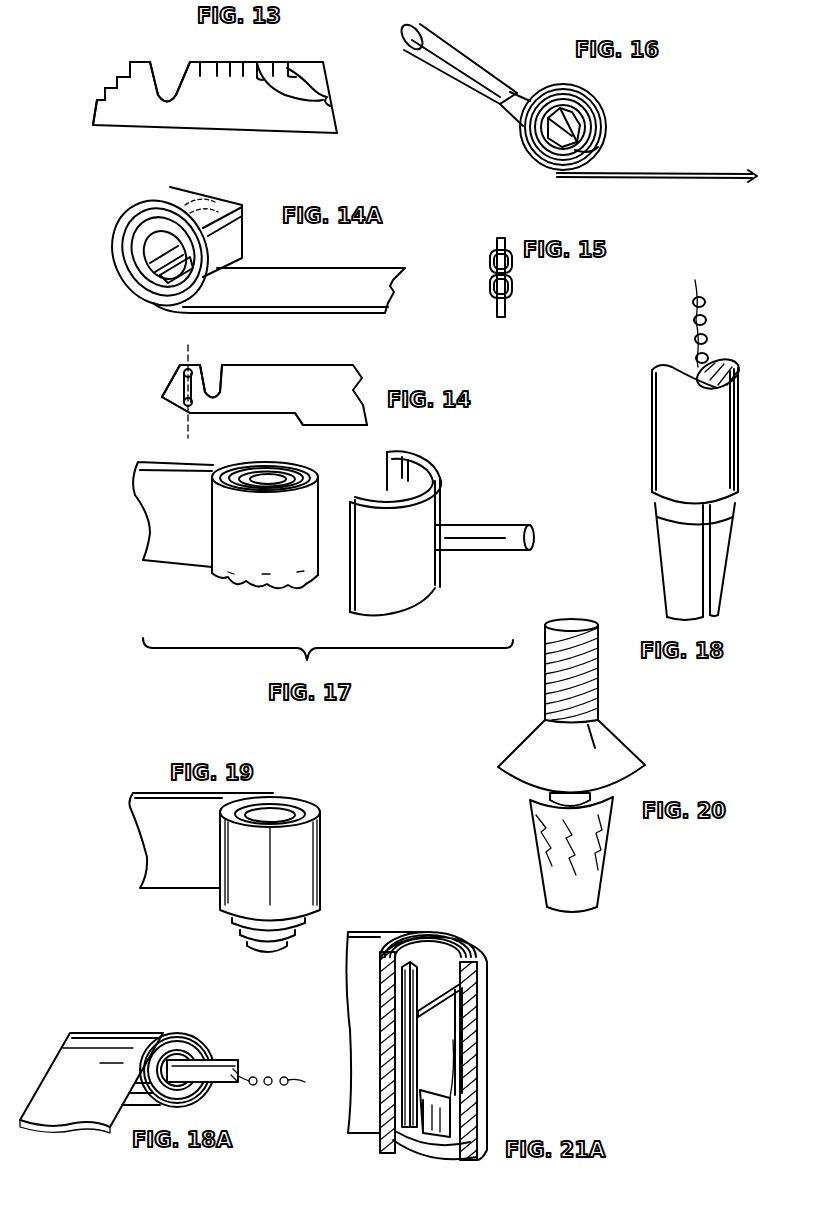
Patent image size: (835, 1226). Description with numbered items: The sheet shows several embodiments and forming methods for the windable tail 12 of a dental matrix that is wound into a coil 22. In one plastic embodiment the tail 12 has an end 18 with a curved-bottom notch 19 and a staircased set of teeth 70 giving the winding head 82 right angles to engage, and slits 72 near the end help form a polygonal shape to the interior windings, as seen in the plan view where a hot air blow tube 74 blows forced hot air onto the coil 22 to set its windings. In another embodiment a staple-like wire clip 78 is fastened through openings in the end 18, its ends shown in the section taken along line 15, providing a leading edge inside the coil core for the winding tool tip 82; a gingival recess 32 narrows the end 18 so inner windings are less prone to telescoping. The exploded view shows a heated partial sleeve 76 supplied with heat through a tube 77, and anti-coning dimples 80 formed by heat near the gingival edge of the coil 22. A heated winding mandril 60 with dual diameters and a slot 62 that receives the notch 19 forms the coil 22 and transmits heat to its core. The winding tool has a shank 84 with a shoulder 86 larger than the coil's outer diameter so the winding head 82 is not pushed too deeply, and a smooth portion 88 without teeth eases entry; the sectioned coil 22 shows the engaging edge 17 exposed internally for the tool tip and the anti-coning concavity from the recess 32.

In FIG. 13, the tail 12 is at (313, 67).
In FIG. 14A, the tail 12 is at (302, 298).
In FIG. 14, the tail 12 is at (313, 374).
In FIG. 17, the tail 12 is at (170, 558).
In FIG. 19, the tail 12 is at (192, 880).
In FIG. 21A, the tail 12 is at (360, 942).
In FIG. 14, the line 15— 15 is at (178, 429).
In FIG. 21A, the engaging edge 17 is at (463, 980).
In FIG. 13, the end 18 is at (120, 105).
In FIG. 14A, the end 18 is at (187, 297).
In FIG. 15, the end 18 is at (497, 308).
In FIG. 14, the end 18 is at (170, 397).
In FIG. 13, the notch 19 is at (162, 97).
In FIG. 16, the notch 19 is at (550, 133).
In FIG. 14A, the notch 19 is at (143, 267).
In FIG. 14, the notch 19 is at (216, 364).
In FIG. 21A, the notch 19 is at (470, 1042).
In FIG. 16, the coil 22 is at (600, 108).
In FIG. 17, the coil 22 is at (318, 502).
In FIG. 19, the coil 22 is at (322, 825).
In FIG. 18A, the coil 22 is at (172, 1037).
In FIG. 21A, the coil 22 is at (428, 903).
In FIG. 14, the gingival recess 32 is at (263, 416).
In FIG. 21A, the gingival recess 32 is at (430, 1137).
In FIG. 18, the heated winding mandril 60 is at (657, 467).
In FIG. 18A, the heated winding mandril 60 is at (212, 1065).
In FIG. 18, the slot 62 is at (705, 542).
In FIG. 13, the teeth 70 is at (110, 93).
In FIG. 13, the slits 72 is at (323, 100).
In FIG. 16, the slits 72 is at (600, 147).
In FIG. 16, the hot air blow tube 74 is at (460, 70).
In FIG. 17, the heated partial sleeve 76 is at (442, 498).
In FIG. 17, the tube 77 is at (487, 523).
In FIG. 14A, the wire clip 78 is at (170, 280).
In FIG. 15, the wire clip 78 is at (512, 278).
In FIG. 14, the wire clip 78 is at (183, 390).
In FIG. 17, the anti-coning dimples 80 is at (267, 587).
In FIG. 20, the winding head 82 is at (537, 842).
In FIG. 20, the shank 84 is at (545, 680).
In FIG. 20, the shoulder 86 is at (522, 742).
In FIG. 20, the smooth portion 88 is at (629, 850).